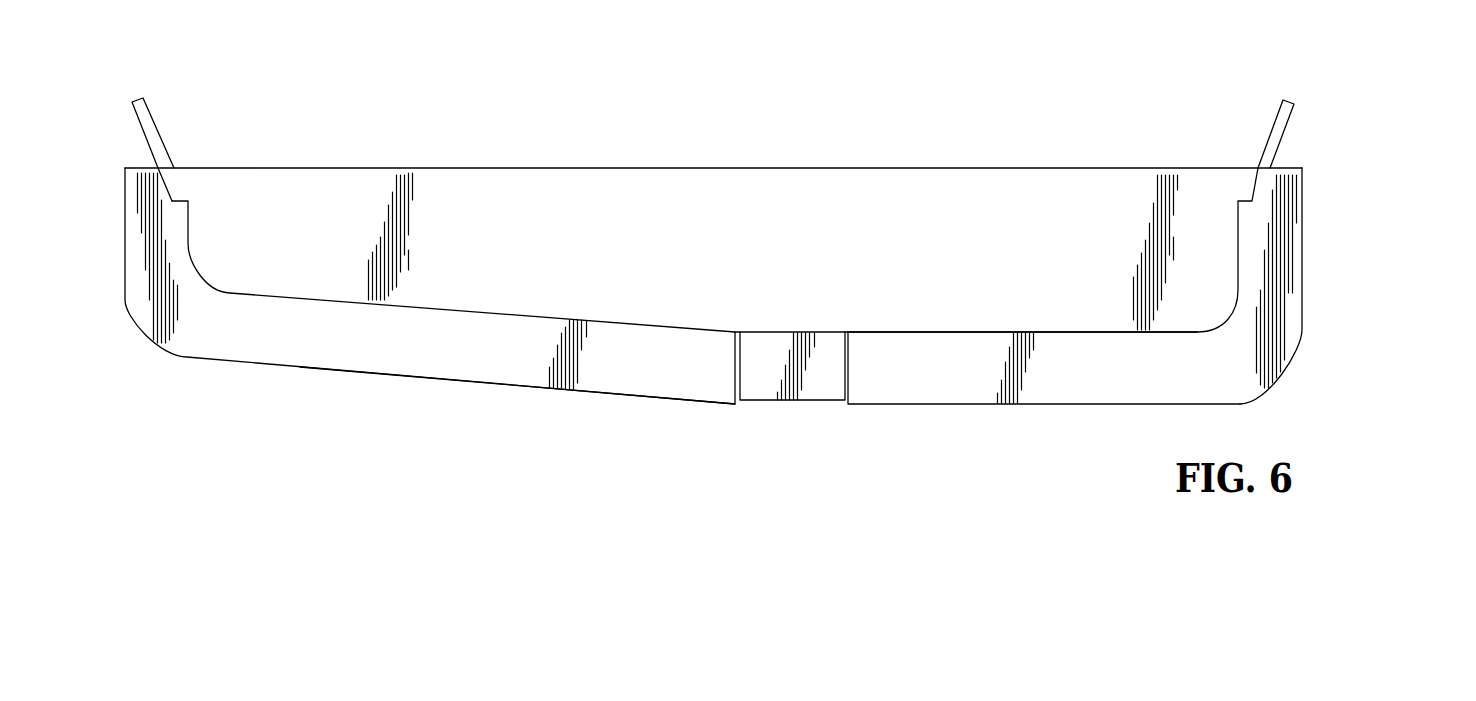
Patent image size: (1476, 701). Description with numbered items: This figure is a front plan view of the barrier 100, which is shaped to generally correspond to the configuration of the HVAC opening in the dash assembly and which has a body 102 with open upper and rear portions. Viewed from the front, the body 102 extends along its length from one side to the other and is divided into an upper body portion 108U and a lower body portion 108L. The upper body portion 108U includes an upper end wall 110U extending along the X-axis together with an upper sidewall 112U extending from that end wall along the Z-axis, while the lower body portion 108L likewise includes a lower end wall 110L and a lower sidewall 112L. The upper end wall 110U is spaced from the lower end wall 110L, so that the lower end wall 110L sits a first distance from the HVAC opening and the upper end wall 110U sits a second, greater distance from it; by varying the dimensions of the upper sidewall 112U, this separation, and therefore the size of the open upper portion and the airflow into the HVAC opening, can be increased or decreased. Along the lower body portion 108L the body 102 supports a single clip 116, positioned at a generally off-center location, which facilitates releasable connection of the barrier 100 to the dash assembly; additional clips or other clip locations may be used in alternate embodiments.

The barrier 100 is at (657, 140).
The body 102 is at (332, 373).
The upper body portion 108U is at (975, 298).
The lower body portion 108L is at (915, 364).
The upper end wall 110U is at (703, 202).
The lower end wall 110L is at (595, 370).
The upper sidewall 112U is at (1238, 247).
The lower sidewall 112L is at (1302, 280).
The clip 116 is at (787, 405).